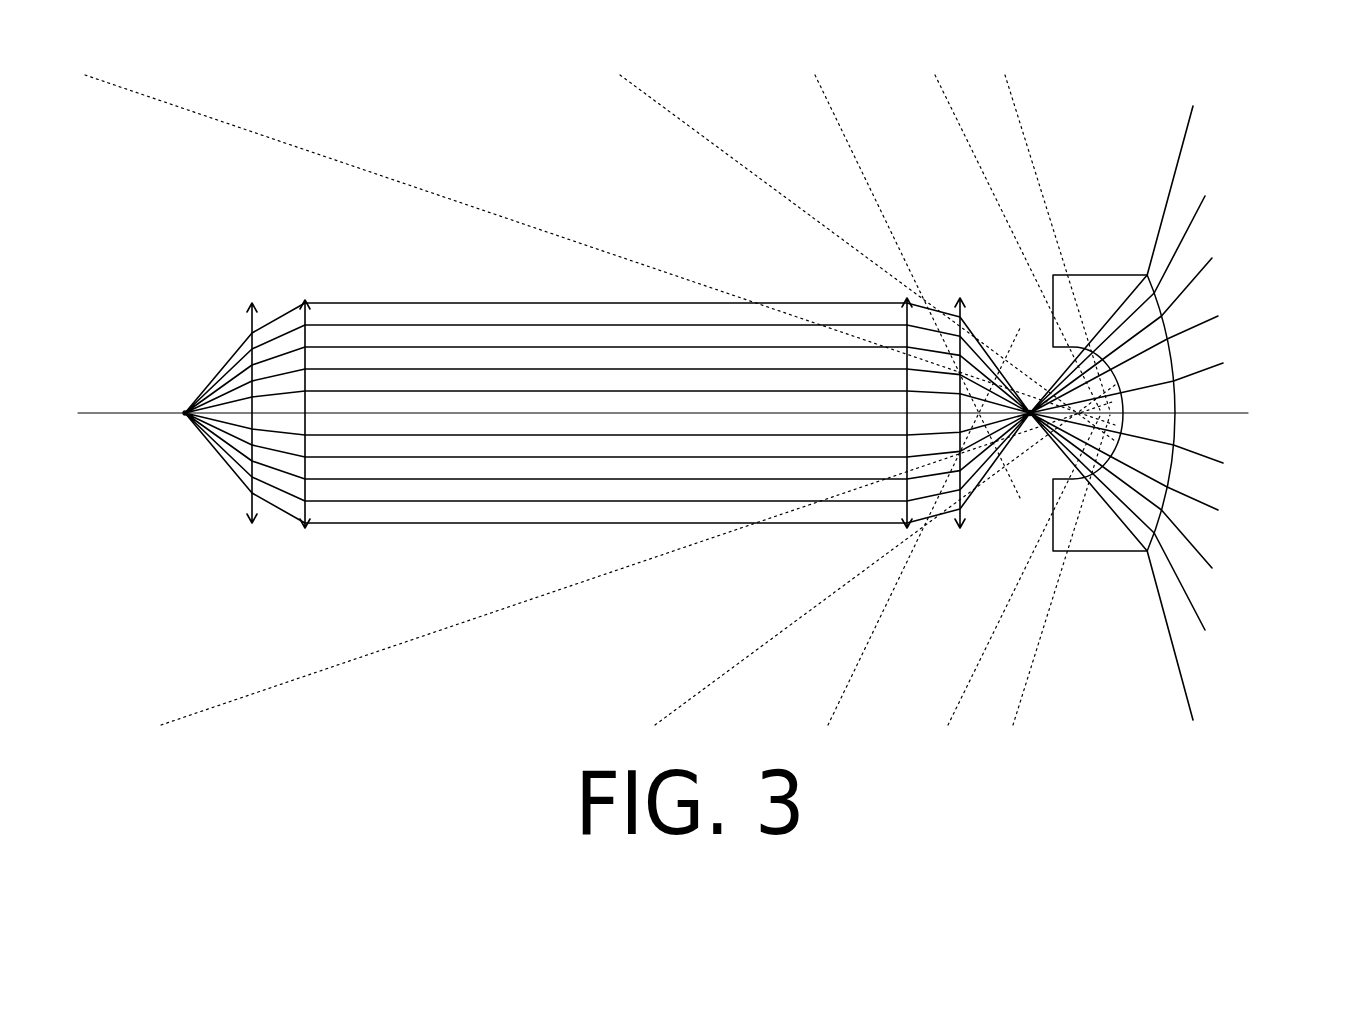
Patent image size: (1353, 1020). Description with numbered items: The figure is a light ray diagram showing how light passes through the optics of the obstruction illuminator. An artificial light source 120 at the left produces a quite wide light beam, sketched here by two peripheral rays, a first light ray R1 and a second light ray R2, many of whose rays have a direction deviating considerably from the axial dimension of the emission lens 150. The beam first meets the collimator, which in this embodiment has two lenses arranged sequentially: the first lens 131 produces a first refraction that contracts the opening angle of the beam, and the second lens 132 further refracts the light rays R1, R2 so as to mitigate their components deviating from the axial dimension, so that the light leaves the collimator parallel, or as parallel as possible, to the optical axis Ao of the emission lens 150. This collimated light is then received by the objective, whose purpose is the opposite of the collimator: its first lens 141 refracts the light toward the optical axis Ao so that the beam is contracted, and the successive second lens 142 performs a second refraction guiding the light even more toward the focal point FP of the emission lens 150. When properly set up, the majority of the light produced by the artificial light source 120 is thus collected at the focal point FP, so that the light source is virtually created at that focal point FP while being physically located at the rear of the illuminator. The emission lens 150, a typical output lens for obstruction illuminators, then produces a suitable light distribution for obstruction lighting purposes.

The artificial light source 120 is at (182, 425).
The first lens 131 is at (252, 523).
The second lens 132 is at (305, 528).
The first lens 141 is at (907, 528).
The second lens 142 is at (962, 530).
The emission lens 150 is at (1122, 275).
The focal point FP is at (1028, 393).
The first light ray R1 is at (382, 303).
The second light ray R2 is at (370, 523).
The optical axis Ao is at (1248, 413).